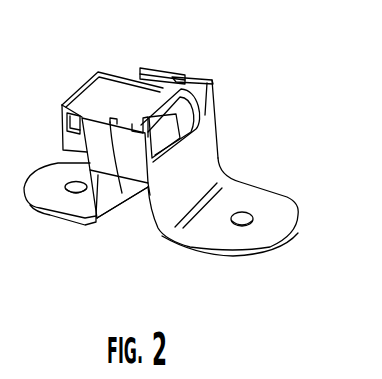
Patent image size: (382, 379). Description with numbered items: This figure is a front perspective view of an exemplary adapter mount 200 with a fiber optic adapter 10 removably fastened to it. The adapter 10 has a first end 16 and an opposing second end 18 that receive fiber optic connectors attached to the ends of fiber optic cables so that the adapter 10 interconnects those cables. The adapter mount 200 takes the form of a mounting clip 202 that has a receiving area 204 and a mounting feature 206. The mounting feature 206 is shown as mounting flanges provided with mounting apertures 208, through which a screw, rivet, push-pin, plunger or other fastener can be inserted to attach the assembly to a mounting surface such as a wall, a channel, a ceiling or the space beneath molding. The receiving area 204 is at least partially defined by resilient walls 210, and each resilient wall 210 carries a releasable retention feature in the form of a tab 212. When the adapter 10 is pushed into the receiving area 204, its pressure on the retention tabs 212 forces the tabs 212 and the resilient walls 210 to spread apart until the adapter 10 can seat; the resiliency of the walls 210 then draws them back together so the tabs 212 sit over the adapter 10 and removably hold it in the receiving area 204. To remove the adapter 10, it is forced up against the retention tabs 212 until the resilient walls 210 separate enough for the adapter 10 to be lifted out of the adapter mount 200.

The adapter 10 is at (152, 150).
The first end 16 is at (148, 189).
The second end 18 is at (85, 83).
The adapter mount 200 is at (190, 180).
The mounting clip 202 is at (222, 167).
The receiving area 204 is at (216, 108).
The mounting feature 206 is at (75, 216).
The mounting apertures 208 is at (73, 181).
The resilient walls 210 is at (66, 136).
The retention tab 212 is at (172, 78).